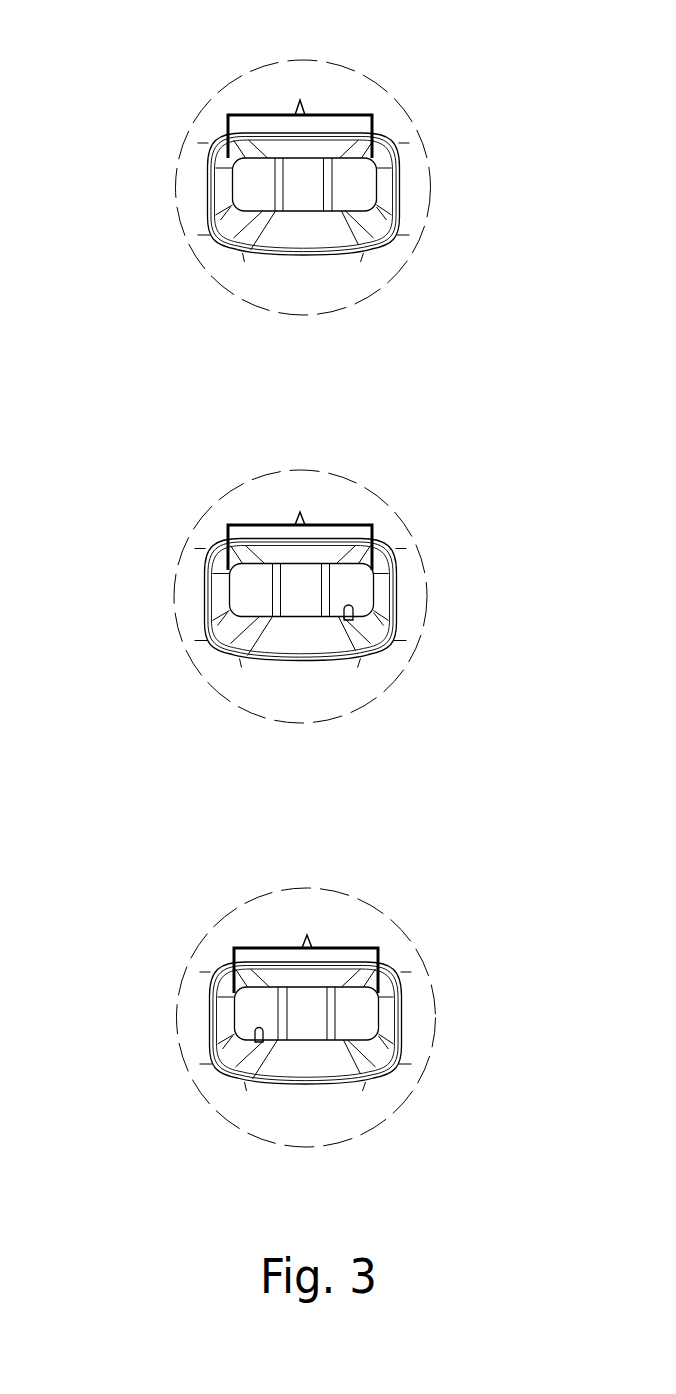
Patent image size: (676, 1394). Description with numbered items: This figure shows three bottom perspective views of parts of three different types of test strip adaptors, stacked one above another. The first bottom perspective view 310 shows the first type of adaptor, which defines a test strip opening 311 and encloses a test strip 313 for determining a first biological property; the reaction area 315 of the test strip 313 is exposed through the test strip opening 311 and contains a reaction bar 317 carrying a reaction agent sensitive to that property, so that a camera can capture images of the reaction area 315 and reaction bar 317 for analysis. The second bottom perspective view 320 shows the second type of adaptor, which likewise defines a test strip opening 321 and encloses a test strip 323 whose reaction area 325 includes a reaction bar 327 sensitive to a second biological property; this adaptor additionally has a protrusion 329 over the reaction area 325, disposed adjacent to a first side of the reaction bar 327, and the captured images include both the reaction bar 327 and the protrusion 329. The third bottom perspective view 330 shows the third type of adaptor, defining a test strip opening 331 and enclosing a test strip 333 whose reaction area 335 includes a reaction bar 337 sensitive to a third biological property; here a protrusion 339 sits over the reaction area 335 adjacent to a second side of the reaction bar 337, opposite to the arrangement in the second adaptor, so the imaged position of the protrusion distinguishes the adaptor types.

The first bottom perspective view 310 is at (158, 95).
The test strip opening 311 is at (393, 168).
The test strip 313 is at (348, 187).
The reaction area 315 is at (300, 100).
The reaction bar 317 is at (330, 193).
The second bottom perspective view 320 is at (163, 505).
The test strip opening 321 is at (388, 568).
The test strip 323 is at (347, 570).
The reaction area 325 is at (300, 512).
The reaction bar 327 is at (323, 602).
The protrusion 329 is at (353, 612).
The third bottom perspective view 330 is at (174, 897).
The test strip opening 331 is at (393, 992).
The test strip 333 is at (358, 1003).
The reaction area 335 is at (307, 935).
The reaction bar 337 is at (332, 1020).
The protrusion 339 is at (253, 1038).